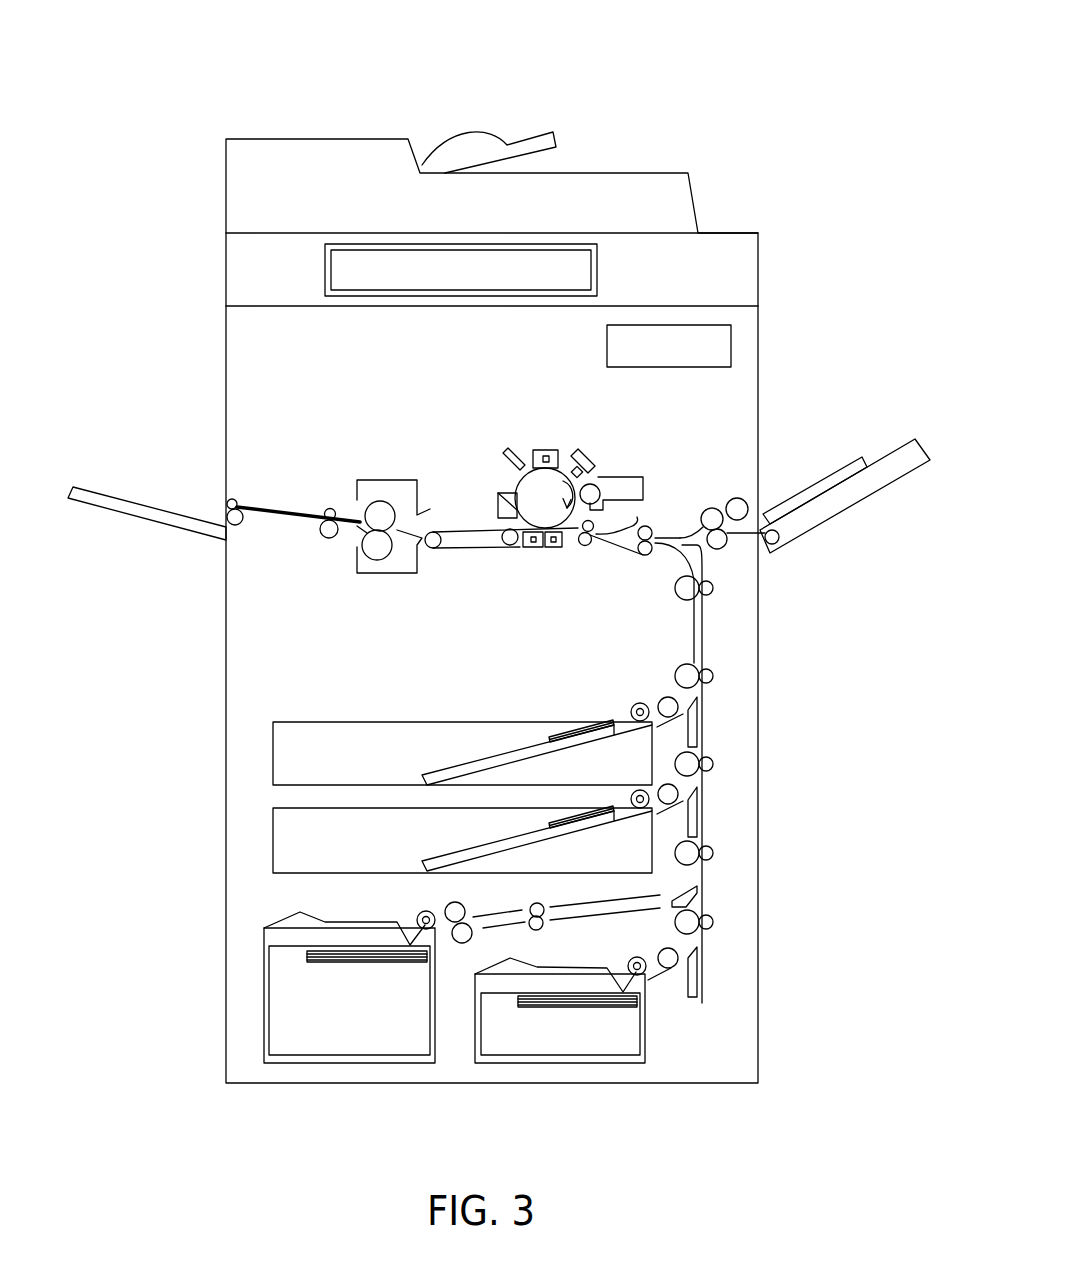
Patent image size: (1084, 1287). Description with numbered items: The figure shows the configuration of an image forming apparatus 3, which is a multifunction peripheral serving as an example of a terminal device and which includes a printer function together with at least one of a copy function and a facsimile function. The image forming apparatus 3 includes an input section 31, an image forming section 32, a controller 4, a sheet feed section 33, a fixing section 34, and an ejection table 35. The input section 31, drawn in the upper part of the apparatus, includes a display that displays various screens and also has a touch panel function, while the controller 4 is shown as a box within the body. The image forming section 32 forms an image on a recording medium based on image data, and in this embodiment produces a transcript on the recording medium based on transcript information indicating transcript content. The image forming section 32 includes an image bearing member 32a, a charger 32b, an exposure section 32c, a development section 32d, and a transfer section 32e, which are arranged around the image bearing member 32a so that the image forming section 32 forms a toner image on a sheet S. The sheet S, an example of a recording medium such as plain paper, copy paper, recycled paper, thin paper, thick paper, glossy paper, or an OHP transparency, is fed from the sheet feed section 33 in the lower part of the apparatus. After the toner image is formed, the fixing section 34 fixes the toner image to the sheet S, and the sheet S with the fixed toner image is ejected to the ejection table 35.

The image forming apparatus 3 is at (527, 102).
The input section 31 is at (325, 264).
The controller 4 is at (731, 342).
The ejection table 35 is at (142, 497).
The fixing section 34 is at (380, 588).
The image forming section 32 is at (552, 506).
The image bearing member 32a is at (535, 492).
The charger 32b is at (540, 448).
The exposure section 32c is at (585, 456).
The development section 32d is at (633, 480).
The transfer section 32e is at (536, 548).
The sheet feed section 33 is at (287, 893).
The sheet S is at (489, 758).